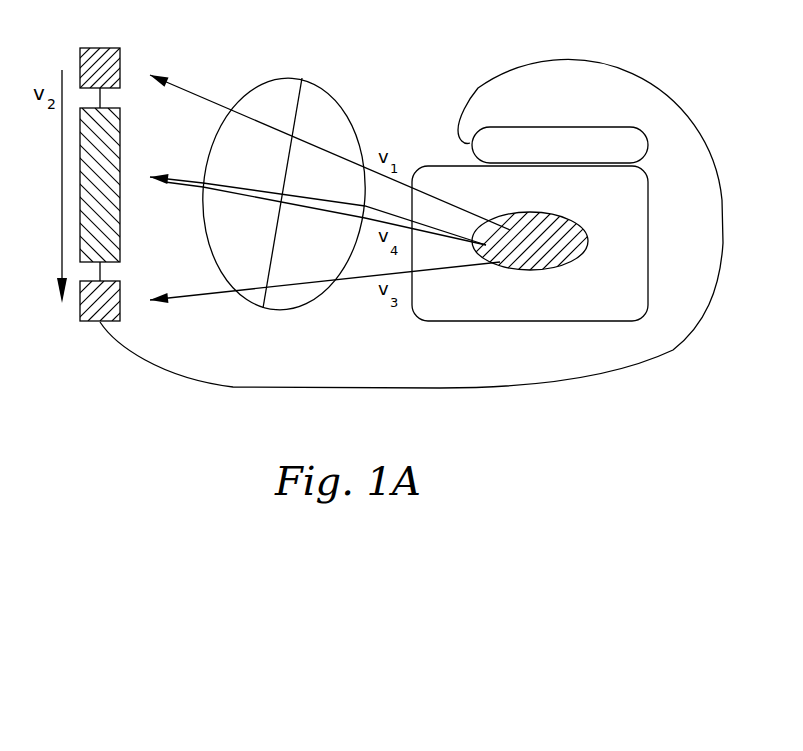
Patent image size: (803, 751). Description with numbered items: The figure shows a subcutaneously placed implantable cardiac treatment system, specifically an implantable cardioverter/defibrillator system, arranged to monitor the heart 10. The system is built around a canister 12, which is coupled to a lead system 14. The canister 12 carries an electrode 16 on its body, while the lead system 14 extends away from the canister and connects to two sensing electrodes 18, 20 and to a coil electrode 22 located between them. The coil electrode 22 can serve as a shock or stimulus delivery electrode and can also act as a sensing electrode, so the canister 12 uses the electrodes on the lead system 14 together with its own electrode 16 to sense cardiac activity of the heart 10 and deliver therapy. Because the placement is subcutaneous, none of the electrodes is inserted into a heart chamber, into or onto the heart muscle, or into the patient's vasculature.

The heart 10 is at (308, 92).
The canister 12 is at (650, 240).
The lead system 14 is at (413, 386).
The electrode 16 is at (545, 224).
The sensing electrode 18 is at (93, 321).
The sensing electrode 20 is at (105, 48).
The coil electrode 22 is at (120, 155).